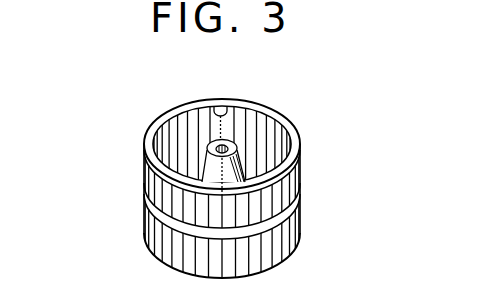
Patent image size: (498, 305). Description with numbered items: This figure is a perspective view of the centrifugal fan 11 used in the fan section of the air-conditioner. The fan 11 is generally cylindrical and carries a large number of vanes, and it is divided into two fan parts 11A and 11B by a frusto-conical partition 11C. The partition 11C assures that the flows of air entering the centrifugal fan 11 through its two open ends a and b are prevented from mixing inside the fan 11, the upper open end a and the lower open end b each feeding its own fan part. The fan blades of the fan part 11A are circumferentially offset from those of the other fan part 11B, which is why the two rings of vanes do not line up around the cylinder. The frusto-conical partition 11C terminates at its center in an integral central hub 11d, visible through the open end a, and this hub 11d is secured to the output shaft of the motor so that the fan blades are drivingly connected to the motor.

The centrifugal fan 11 is at (133, 132).
The fan part 11A is at (148, 180).
The fan part 11B is at (148, 234).
The frusto-conical partition 11C is at (298, 213).
The central hub 11d is at (237, 163).
The open end a is at (226, 111).
The open end b is at (256, 269).